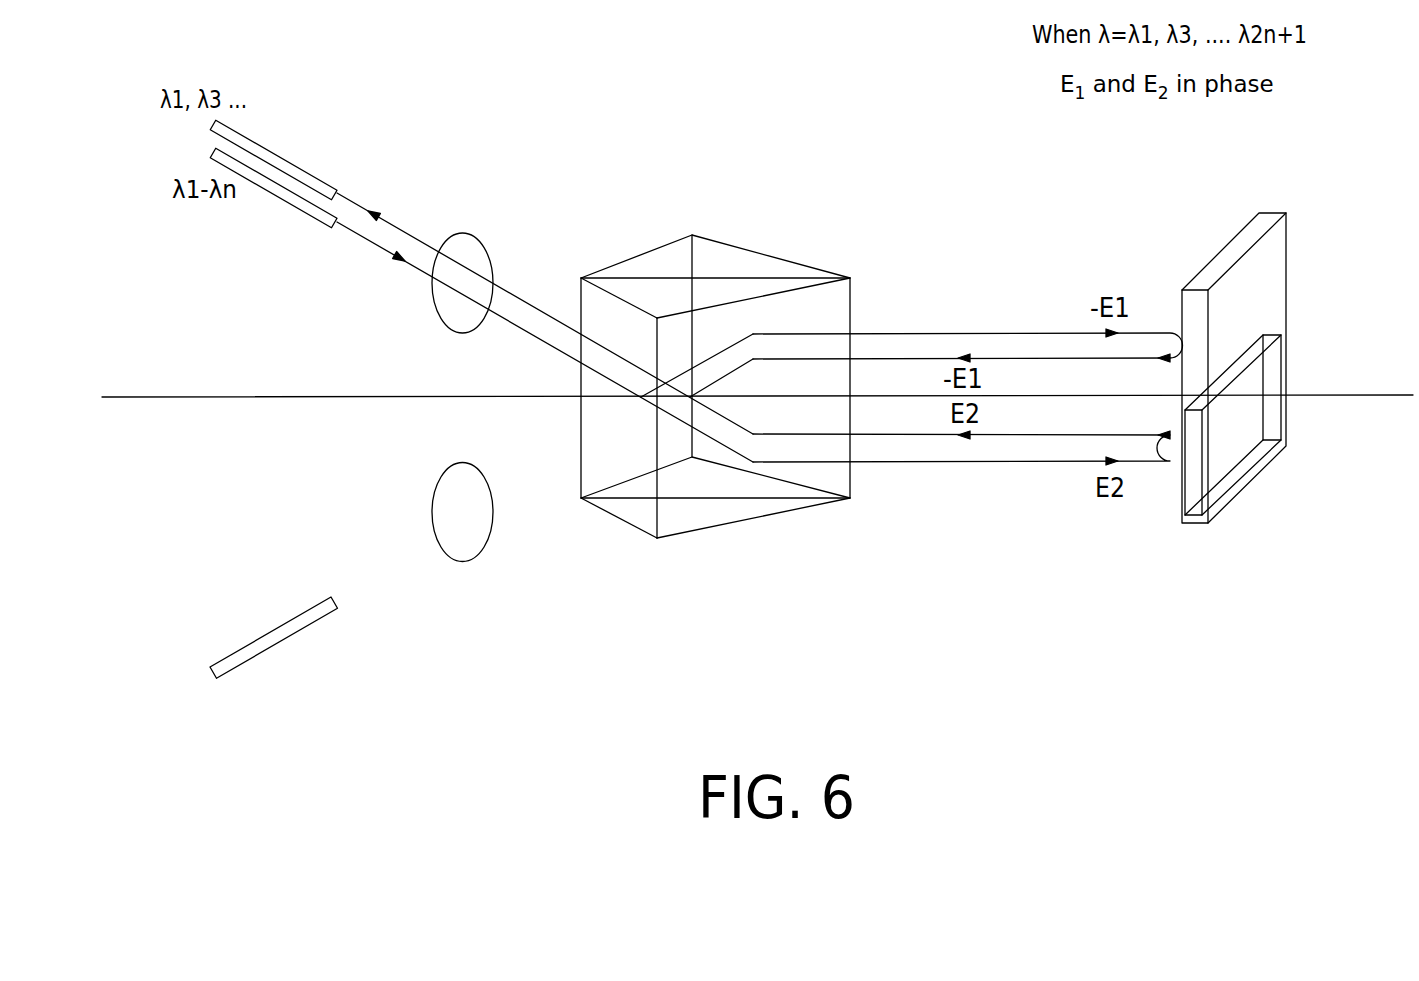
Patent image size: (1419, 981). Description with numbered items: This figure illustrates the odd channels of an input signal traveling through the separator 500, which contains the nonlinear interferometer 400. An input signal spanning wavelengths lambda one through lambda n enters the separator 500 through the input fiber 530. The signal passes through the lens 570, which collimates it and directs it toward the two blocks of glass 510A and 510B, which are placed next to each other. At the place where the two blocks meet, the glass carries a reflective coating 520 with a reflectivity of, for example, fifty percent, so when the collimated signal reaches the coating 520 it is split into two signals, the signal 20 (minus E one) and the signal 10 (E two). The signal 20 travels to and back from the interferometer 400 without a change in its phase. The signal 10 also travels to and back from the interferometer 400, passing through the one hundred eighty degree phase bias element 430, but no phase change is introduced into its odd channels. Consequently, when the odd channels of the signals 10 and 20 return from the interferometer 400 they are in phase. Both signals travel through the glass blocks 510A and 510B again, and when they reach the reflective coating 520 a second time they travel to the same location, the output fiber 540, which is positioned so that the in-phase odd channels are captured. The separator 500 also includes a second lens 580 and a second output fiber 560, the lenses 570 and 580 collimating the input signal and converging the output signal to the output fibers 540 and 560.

The signal 10 is at (1022, 470).
The signal 20 is at (1023, 332).
The nonlinear interferometer 400 is at (1276, 212).
The 180 degree phase bias element 430 is at (1183, 498).
The separator 500 is at (845, 115).
The block of glass 510A is at (581, 300).
The block of glass 510B is at (648, 251).
The reflective coating 520 is at (592, 400).
The input fiber 530 is at (303, 212).
The output fiber 540 is at (297, 164).
The output fiber 560 is at (290, 638).
The lens 570 is at (461, 233).
The lens 580 is at (473, 560).